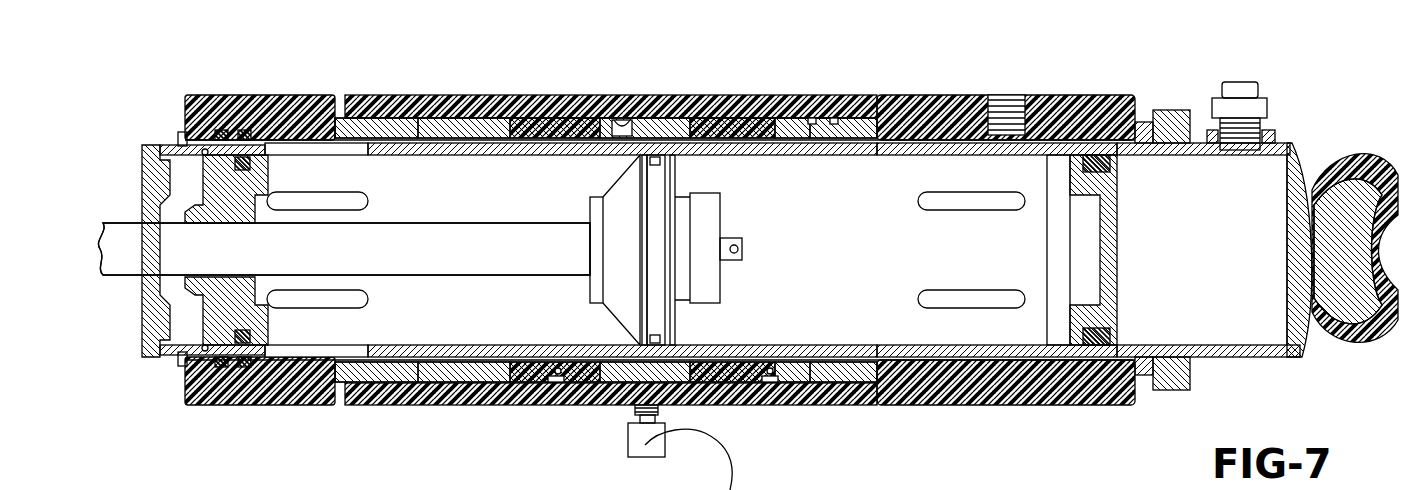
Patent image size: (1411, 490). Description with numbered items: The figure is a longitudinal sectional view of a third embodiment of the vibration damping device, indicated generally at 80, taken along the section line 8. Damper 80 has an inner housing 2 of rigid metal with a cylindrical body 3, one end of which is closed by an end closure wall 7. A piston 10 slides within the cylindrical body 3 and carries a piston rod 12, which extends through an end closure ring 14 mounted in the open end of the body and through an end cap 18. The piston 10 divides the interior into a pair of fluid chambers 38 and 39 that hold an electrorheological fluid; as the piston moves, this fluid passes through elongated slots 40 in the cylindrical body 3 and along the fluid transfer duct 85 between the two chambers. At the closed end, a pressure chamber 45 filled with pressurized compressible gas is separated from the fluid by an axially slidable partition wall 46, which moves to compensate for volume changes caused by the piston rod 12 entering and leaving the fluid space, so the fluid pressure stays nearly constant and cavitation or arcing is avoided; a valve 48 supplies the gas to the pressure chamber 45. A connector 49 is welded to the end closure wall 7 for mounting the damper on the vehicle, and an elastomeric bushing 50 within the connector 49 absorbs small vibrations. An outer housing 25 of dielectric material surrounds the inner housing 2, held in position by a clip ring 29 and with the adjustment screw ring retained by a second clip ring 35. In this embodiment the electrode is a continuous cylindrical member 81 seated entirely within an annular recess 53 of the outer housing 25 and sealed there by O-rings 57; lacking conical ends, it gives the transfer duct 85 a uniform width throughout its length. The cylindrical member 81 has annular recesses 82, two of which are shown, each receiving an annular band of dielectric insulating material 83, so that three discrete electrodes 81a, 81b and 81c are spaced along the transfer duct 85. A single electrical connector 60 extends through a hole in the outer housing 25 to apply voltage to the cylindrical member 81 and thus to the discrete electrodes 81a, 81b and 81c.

The vibration damping device 80 is at (182, 80).
The inner housing 2 is at (1272, 362).
The cylindrical body 3 is at (888, 350).
The end closure wall 7 is at (1305, 168).
The section line 8- 8 is at (750, 85).
The piston 10 is at (660, 215).
The piston rod 12 is at (465, 263).
The end closure ring 14 is at (228, 305).
The end cap 18 is at (150, 200).
The outer housing 25 is at (1034, 412).
The clip ring 29 is at (175, 362).
The clip ring 35 is at (1193, 368).
The fluid chamber 38 is at (454, 203).
The fluid chamber 39 is at (838, 256).
The elongated slots 40 is at (935, 198).
The pressure chamber 45 is at (1245, 283).
The partition wall 46 is at (1118, 210).
The valve 48 is at (1268, 108).
The connector 49 is at (1368, 178).
The elastomeric bushing 50 is at (1360, 200).
The annular recess 53 is at (628, 125).
The O-rings 57 is at (440, 118).
The electrical connector 60 is at (640, 458).
The continuous cylindrical member 81 is at (618, 146).
The discrete electrode 81a is at (463, 362).
The discrete electrode 81b is at (632, 357).
The discrete electrode 81c is at (848, 363).
The annular recesses 82 is at (560, 374).
The dielectric insulating material band 83 is at (530, 362).
The fluid transfer duct 85 is at (392, 357).